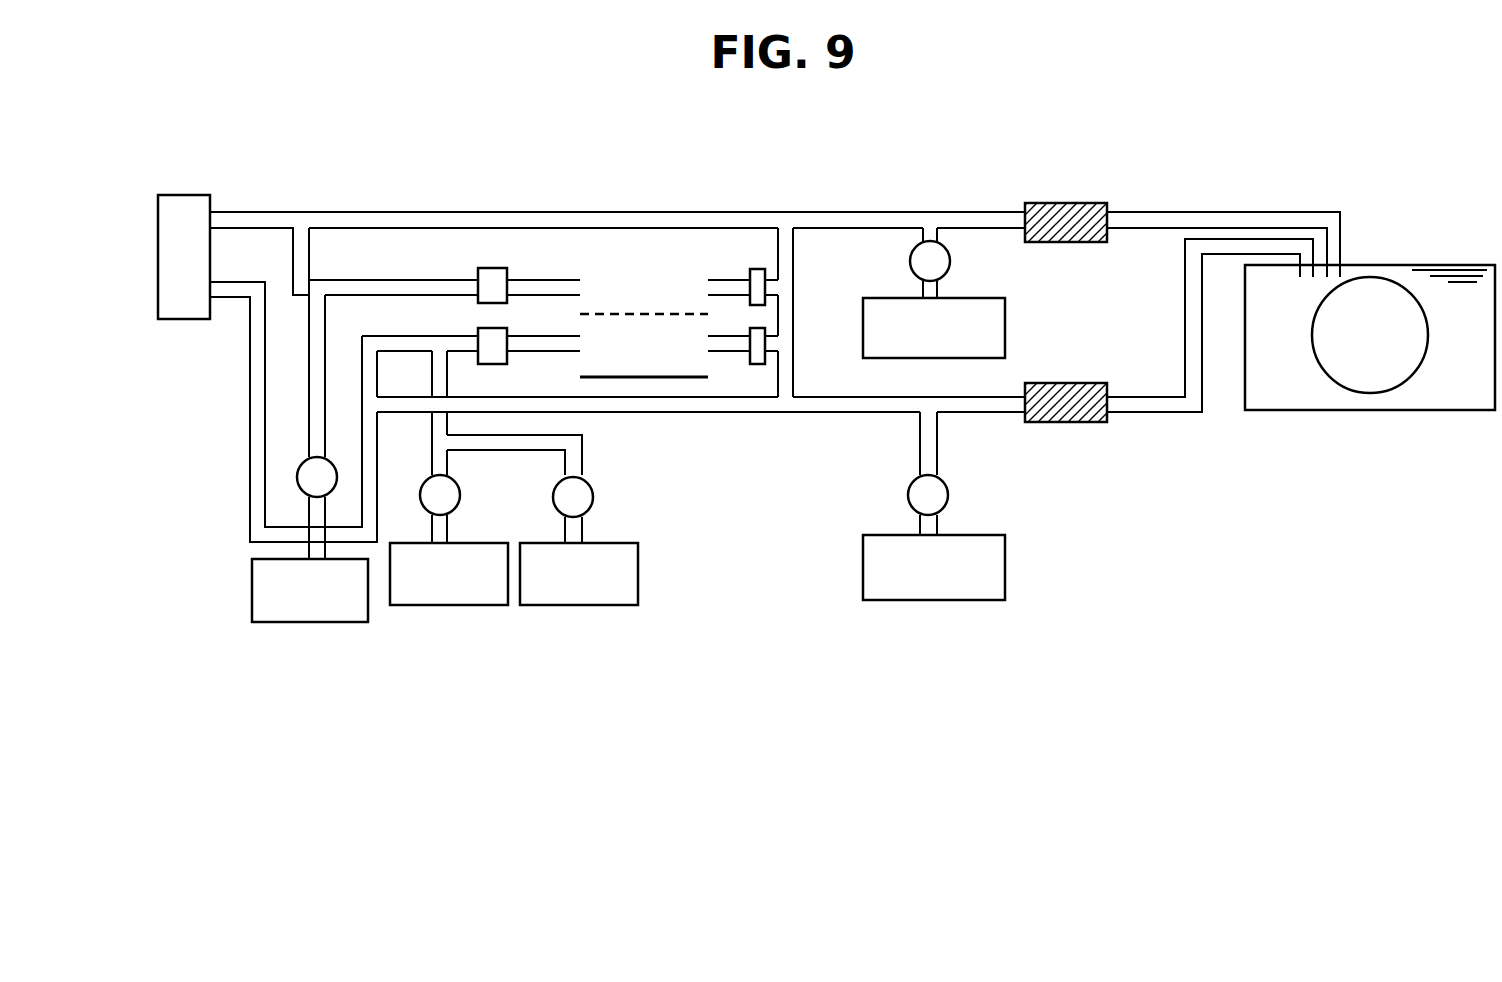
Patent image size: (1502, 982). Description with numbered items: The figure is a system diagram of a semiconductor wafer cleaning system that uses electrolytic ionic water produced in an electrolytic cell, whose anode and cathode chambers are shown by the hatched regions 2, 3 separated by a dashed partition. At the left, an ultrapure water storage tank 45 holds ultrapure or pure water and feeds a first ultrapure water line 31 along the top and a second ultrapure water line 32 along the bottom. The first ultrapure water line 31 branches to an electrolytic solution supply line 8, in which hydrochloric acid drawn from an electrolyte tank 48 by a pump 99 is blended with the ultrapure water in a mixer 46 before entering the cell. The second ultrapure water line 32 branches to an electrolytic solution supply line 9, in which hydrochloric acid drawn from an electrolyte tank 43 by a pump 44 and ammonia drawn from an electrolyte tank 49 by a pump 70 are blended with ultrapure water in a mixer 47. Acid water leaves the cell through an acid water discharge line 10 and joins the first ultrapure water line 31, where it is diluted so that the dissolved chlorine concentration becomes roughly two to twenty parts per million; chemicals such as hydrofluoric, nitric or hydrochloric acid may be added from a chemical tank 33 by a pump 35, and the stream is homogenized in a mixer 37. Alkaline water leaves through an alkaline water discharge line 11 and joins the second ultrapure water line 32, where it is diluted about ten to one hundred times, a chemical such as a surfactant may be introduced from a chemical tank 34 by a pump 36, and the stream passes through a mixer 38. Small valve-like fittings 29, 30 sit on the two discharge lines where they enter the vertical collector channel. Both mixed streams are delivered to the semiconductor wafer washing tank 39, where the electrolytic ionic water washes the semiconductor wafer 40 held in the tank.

The partition membrane 2 is at (678, 247).
The reaction chamber (second compartment) 3 is at (650, 377).
The electrolytic solution supply line 8 is at (403, 279).
The electrolytic solution supply line 9 is at (402, 336).
The acid water discharge line 10 is at (730, 280).
The alkaline water discharge line 11 is at (826, 410).
The first outlet valve 29 is at (757, 269).
The second outlet valve 30 is at (755, 364).
The first ultrapure water line 31 is at (885, 212).
The second ultrapure water line 32 is at (815, 400).
The chemical tank 33 is at (863, 320).
The chemical tank 34 is at (863, 567).
The pump 35 is at (910, 261).
The pump 36 is at (908, 495).
The mixer 37 is at (1063, 203).
The mixer 38 is at (1062, 383).
The semiconductor wafer washing tank 39 is at (1415, 412).
The semiconductor wafer 40 is at (1397, 305).
The electrolyte tank 43 is at (452, 607).
The pump 44 is at (460, 497).
The ultrapure water storage tank 45 is at (187, 322).
The mixer 46 is at (488, 268).
The mixer 47 is at (488, 328).
The electrolyte tank 48 is at (305, 624).
The electrolyte tank 49 is at (572, 607).
The pump 70 is at (593, 497).
The pump 99 is at (304, 463).